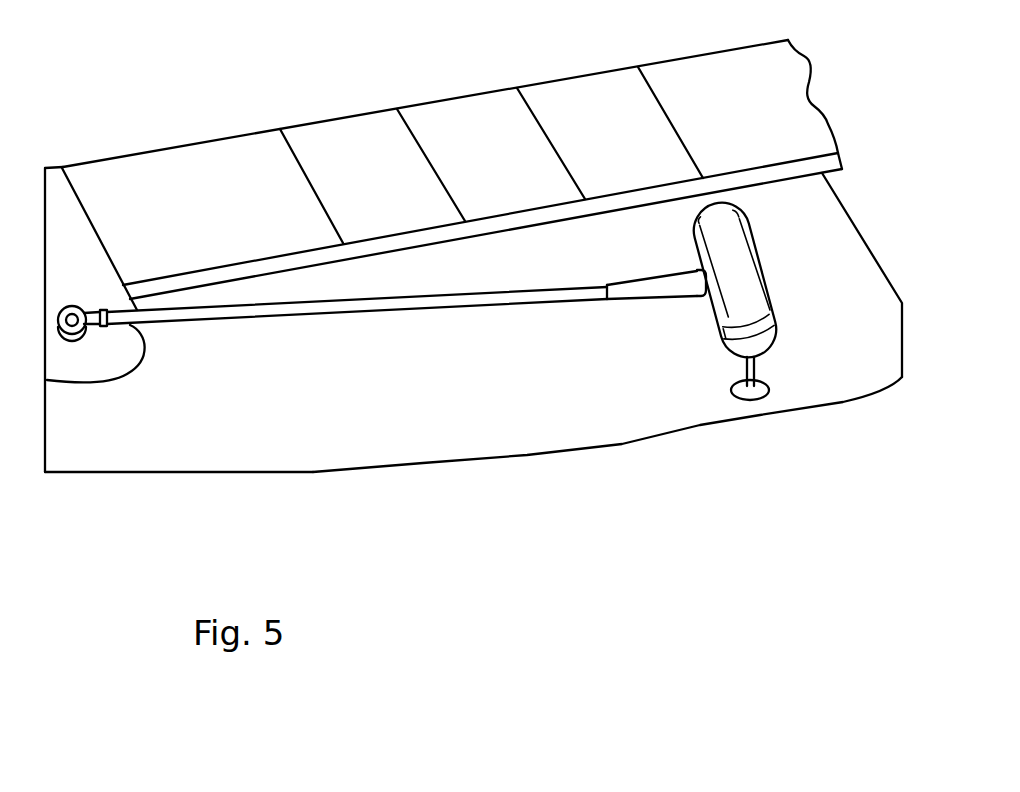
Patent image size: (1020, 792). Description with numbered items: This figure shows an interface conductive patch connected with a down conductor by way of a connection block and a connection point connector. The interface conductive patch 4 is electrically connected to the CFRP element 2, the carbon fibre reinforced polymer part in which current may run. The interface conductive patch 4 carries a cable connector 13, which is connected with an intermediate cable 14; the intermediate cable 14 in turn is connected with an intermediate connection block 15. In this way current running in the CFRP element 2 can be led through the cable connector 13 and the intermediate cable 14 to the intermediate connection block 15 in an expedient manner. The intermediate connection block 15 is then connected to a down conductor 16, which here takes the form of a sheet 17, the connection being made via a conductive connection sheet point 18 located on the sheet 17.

The CFRP element 2 is at (375, 197).
The interface conductive patch 4 is at (83, 258).
The cable connector 13 is at (76, 336).
The intermediate cable 14 is at (432, 302).
The intermediate connection block 15 is at (768, 313).
The down conductor 16 is at (622, 422).
The sheet 17 is at (528, 423).
The conductive connection sheet point 18 is at (760, 398).